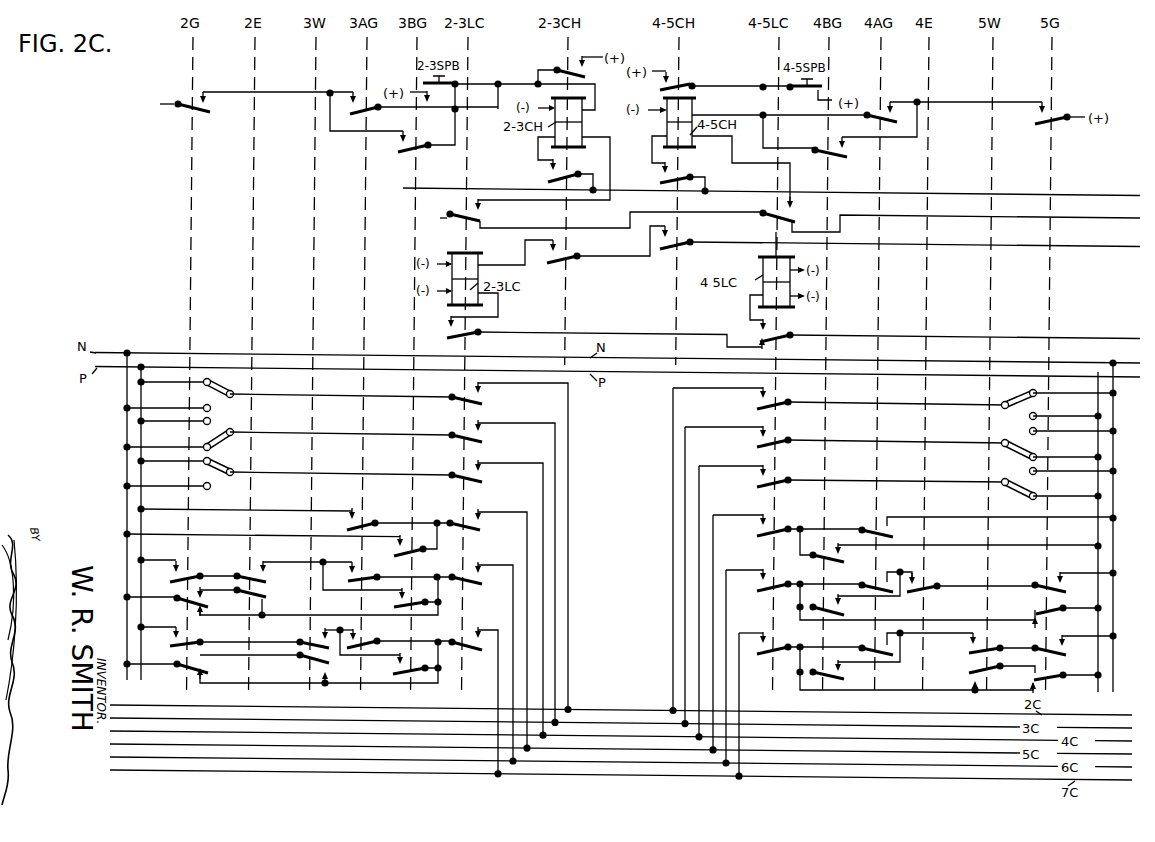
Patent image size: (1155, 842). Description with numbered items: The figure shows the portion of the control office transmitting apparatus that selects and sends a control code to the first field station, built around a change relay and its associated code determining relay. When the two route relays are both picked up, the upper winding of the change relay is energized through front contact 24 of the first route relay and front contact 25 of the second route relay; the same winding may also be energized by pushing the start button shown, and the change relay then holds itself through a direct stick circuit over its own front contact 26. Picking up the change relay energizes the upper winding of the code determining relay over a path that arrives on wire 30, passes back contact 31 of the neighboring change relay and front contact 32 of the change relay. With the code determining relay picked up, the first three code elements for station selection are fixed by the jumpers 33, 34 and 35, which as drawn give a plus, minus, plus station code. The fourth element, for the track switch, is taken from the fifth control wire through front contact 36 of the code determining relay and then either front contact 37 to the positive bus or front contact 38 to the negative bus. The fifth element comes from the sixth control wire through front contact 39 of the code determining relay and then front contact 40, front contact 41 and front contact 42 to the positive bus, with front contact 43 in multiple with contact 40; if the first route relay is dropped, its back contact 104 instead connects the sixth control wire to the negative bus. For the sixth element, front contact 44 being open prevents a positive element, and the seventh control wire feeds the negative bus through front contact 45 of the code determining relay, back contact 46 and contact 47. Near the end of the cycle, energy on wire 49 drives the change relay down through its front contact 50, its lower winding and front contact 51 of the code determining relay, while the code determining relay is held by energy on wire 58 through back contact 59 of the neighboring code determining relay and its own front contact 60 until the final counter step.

The front contact of relay 2G 24 is at (172, 111).
The front contact of relay 3AG 25 is at (367, 117).
The front contact of relay 2-3CH 26 is at (560, 67).
The wire 30 is at (1132, 247).
The back contact of relay 4-5CH 31 is at (677, 246).
The front contact of relay 2-3CH 32 is at (564, 260).
The jumper 33 is at (214, 384).
The jumper 34 is at (221, 442).
The jumper 35 is at (179, 489).
The front contact of relay 2-3LC 36 is at (486, 629).
The front contact of relay 3AG 37 is at (360, 517).
The front contact of relay 3BG 38 is at (392, 572).
The front contact of relay 2-3LC 39 is at (480, 662).
The front contact of relay 3AG 40 is at (274, 550).
The front contact of relay 2E 41 is at (260, 573).
The front contact of relay 2G 42 is at (190, 574).
The front contact of relay 3BG 43 is at (393, 606).
The front contact of relay 3W 44 is at (299, 641).
The front contact of relay 2-3LC 45 is at (473, 702).
The back contact of relay 3W 46 is at (300, 662).
The contact of relay 2G 47 is at (184, 672).
The wire 49 is at (1106, 196).
The front contact of relay 2-3CH 50 is at (574, 170).
The front contact of relay 2-3LC 51 is at (450, 211).
The wire 58 is at (1110, 339).
The back contact of relay 4-5LC 59 is at (785, 327).
The front contact of relay 2-3LC 60 is at (472, 336).
The back contact of relay 2G 104 is at (182, 606).